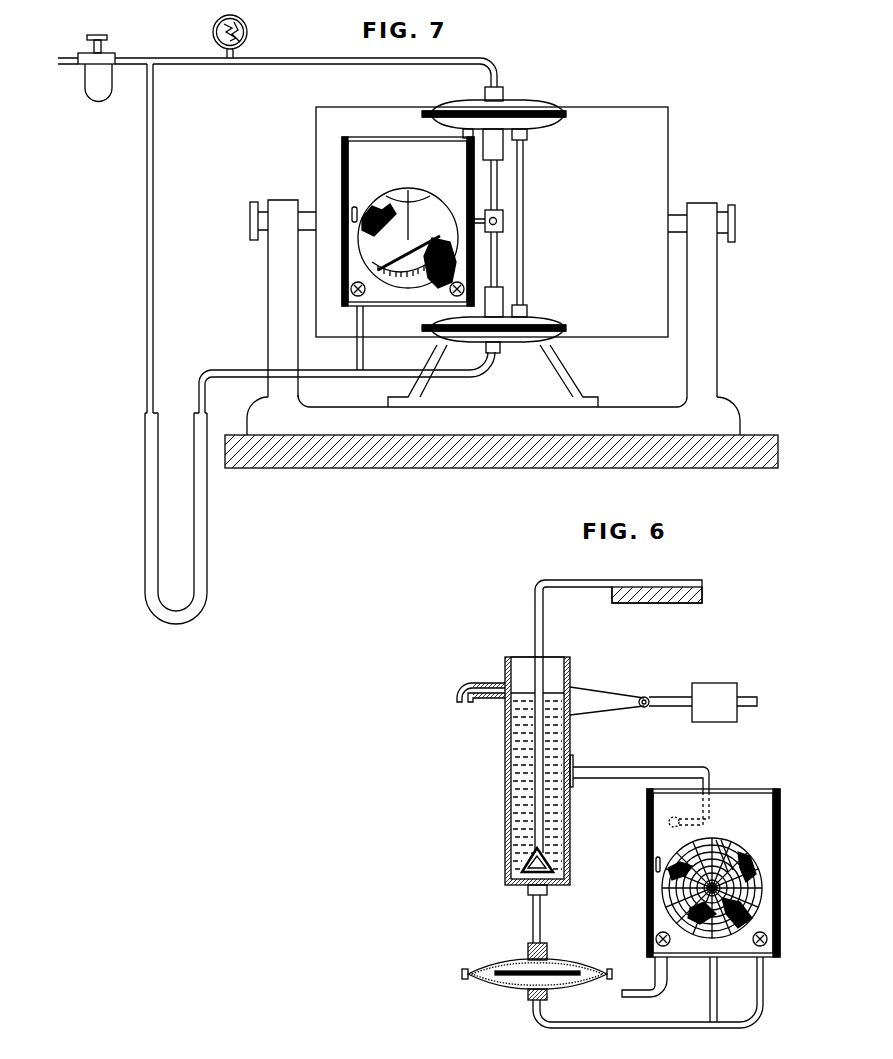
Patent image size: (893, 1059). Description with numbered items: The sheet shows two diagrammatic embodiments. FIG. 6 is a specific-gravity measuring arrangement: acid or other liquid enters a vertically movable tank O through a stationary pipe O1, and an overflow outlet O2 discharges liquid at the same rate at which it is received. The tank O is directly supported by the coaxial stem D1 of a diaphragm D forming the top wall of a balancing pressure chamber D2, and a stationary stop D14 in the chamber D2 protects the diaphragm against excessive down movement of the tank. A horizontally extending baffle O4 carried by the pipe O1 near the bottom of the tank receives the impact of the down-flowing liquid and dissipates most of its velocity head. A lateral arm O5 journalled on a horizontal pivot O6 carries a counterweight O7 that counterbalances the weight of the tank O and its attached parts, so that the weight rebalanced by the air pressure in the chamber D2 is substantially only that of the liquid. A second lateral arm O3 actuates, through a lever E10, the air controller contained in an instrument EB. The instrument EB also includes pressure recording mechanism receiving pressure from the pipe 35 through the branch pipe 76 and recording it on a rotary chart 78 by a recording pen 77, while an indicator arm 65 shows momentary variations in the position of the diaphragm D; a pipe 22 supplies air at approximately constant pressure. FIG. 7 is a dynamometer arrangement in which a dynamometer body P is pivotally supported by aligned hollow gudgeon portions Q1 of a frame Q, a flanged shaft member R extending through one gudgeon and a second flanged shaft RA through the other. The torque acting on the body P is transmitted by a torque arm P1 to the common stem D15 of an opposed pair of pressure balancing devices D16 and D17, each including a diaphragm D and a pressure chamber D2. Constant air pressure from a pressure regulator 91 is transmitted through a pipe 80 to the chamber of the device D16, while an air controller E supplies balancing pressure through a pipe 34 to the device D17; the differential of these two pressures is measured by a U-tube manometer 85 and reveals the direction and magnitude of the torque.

In FIG. 7, the pipe 80 is at (182, 58).
In FIG. 7, the filter 91 is at (92, 88).
In FIG. 7, the U-tube manometer 85 is at (145, 520).
In FIG. 7, the pipe 34 is at (378, 377).
In FIG. 7, the dynamometer body P is at (658, 129).
In FIG. 7, the air controller E is at (373, 143).
In FIG. 7, the frame Q is at (280, 306).
In FIG. 7, the hollow gudgeon portions Q1 is at (291, 204).
In FIG. 7, the flanged shaft member R is at (254, 220).
In FIG. 7, the second flanged shaft RA is at (737, 216).
In FIG. 7, the diaphragm D is at (566, 117).
In FIG. 6, the diaphragm D is at (485, 963).
In FIG. 7, the pressure balancing device D16 is at (523, 104).
In FIG. 7, the pressure balancing device D17 is at (518, 345).
In FIG. 7, the common stem D15 is at (498, 194).
In FIG. 7, the torque arm P1 is at (503, 221).
In FIG. 6, the tank O is at (505, 752).
In FIG. 6, the stationary pipe O1 is at (602, 581).
In FIG. 6, the overflow outlet O2 is at (458, 686).
In FIG. 6, the lateral arm O3 is at (610, 771).
In FIG. 6, the baffle O4 is at (521, 877).
In FIG. 6, the lateral arm O5 is at (595, 698).
In FIG. 6, the horizontal pivot O6 is at (648, 697).
In FIG. 6, the counterweight O7 is at (713, 692).
In FIG. 6, the instrument EB is at (653, 829).
In FIG. 6, the indicator arm 65 is at (692, 846).
In FIG. 6, the recording pen 77 is at (726, 858).
In FIG. 6, the rotary chart 78 is at (758, 896).
In FIG. 6, the lever E10 is at (692, 819).
In FIG. 6, the pipe 22 is at (650, 989).
In FIG. 6, the branch pipe 76 is at (710, 988).
In FIG. 6, the pipe 35 is at (641, 1028).
In FIG. 6, the stem D1 is at (543, 920).
In FIG. 6, the balancing pressure chamber D2 is at (500, 982).
In FIG. 6, the stationary stop D14 is at (530, 987).